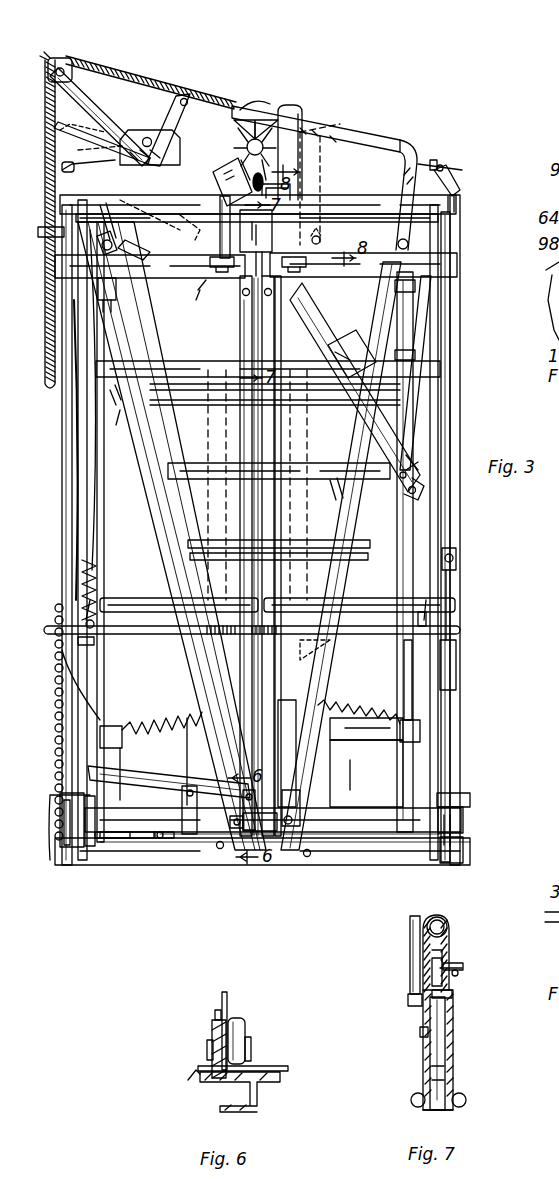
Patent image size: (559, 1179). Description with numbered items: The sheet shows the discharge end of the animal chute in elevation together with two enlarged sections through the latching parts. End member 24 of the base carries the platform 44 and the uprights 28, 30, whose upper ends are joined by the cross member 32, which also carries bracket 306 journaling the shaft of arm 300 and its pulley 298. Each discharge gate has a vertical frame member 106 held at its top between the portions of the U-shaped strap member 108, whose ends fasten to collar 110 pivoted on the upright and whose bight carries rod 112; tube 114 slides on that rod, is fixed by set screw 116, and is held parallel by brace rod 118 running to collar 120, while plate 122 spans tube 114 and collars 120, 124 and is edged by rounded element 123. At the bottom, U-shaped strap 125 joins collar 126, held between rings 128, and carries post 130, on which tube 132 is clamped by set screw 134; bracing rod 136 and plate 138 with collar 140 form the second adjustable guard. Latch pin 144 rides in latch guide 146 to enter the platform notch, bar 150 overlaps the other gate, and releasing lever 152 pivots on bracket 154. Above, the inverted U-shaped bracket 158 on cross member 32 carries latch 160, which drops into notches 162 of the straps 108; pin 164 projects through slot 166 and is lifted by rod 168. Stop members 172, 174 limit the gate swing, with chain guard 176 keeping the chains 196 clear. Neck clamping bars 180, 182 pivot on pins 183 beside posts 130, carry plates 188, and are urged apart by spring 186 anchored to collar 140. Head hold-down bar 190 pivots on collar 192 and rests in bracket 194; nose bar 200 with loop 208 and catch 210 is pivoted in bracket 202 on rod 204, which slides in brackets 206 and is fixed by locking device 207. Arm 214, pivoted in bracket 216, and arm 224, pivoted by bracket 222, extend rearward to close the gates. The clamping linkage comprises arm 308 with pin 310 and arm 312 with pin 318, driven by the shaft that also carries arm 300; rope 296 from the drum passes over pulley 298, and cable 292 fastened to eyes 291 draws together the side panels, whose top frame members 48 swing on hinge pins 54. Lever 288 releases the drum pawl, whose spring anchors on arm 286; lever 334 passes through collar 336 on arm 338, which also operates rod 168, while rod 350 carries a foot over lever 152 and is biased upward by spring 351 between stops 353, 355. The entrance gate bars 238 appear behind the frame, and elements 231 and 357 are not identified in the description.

In FIG. 3, the pulley 298 is at (56, 62).
In FIG. 3, the rope 296 is at (105, 66).
In FIG. 3, the arm 300 is at (92, 98).
In FIG. 3, the arm 308 is at (165, 105).
In FIG. 3, the lever 334 is at (188, 92).
In FIG. 3, the lever 288 is at (222, 108).
In FIG. 3, the collar 336 is at (251, 96).
In FIG. 3, the arm 286 is at (293, 112).
In FIG. 3, the arm 312 is at (311, 128).
In FIG. 3, the cable 292 is at (392, 150).
In FIG. 3, the pin 318 is at (404, 240).
In FIG. 3, the eyes 291 is at (448, 162).
In FIG. 3, the arm 338 is at (215, 152).
In FIG. 3, the bracket 306 is at (176, 176).
In FIG. 3, the inverted U-shaped bracket 158 is at (286, 212).
In FIG. 7, the inverted U-shaped bracket 158 is at (442, 950).
In FIG. 3, the cross member 32 is at (378, 210).
In FIG. 7, the cross member 32 is at (446, 924).
In FIG. 3, the arm 214 is at (220, 222).
In FIG. 7, the arm 214 is at (420, 918).
In FIG. 3, the pin 310 is at (122, 190).
In FIG. 3, the collar 124 is at (104, 280).
In FIG. 3, the bracket 216 is at (212, 266).
In FIG. 3, the bracket 222 is at (300, 264).
In FIG. 3, the collar 110 is at (450, 258).
In FIG. 3, the U-shaped strap member 108 is at (456, 262).
In FIG. 7, the U-shaped strap member 108 is at (452, 1010).
In FIG. 3, the rod 112 is at (200, 282).
In FIG. 7, the rod 112 is at (440, 1055).
In FIG. 3, the plate 122 is at (372, 312).
In FIG. 7, the plate 122 is at (445, 1070).
In FIG. 3, the latch 160 is at (262, 260).
In FIG. 7, the latch 160 is at (440, 960).
In FIG. 3, the head hold-down bar 190 is at (318, 318).
In FIG. 3, the bracket 194 is at (340, 350).
In FIG. 3, the bolt head set screw 116 is at (240, 285).
In FIG. 7, the bolt head set screw 116 is at (440, 1044).
In FIG. 3, the tube 114 is at (248, 325).
In FIG. 7, the tube 114 is at (440, 1084).
In FIG. 3, the arm 224 is at (432, 290).
In FIG. 3, the collar 120 is at (418, 352).
In FIG. 3, the brace rod 118 is at (440, 364).
In FIG. 7, the brace rod 118 is at (420, 1108).
In FIG. 3, the upright 30 is at (458, 380).
In FIG. 3, the vertical frame member 106 is at (418, 396).
In FIG. 3, the collar 192 is at (415, 458).
In FIG. 3, the upright 28 is at (70, 430).
In FIG. 3, the neck clamping bar 180 is at (222, 428).
In FIG. 3, the cylindrical bars 238 is at (250, 470).
In FIG. 3, the neck clamping bar 182 is at (360, 428).
In FIG. 3, the plate 188 is at (140, 500).
In FIG. 3, the rod 350 is at (92, 518).
In FIG. 3, the brackets 206 is at (460, 545).
In FIG. 3, the locking device 207 is at (460, 556).
In FIG. 3, the rod 204 is at (452, 578).
In FIG. 3, the bracing rod 136 is at (430, 600).
In FIG. 3, the loop 208 is at (420, 616).
In FIG. 3, the bar 200 is at (380, 622).
In FIG. 3, the bracket 202 is at (460, 635).
In FIG. 3, the stop 355 is at (96, 566).
In FIG. 3, the spring 351 is at (98, 590).
In FIG. 3, the stop 353 is at (205, 658).
In FIG. 3, the catch 210 is at (70, 650).
In FIG. 3, the chains 196 is at (70, 703).
In FIG. 3, the tube 132 is at (280, 692).
In FIG. 3, the bolt-head set screw 134 is at (290, 714).
In FIG. 3, the plate 138 is at (410, 702).
In FIG. 3, the spring 186 is at (395, 718).
In FIG. 3, the collar 140 is at (420, 730).
In FIG. 3, the lever 357 is at (98, 770).
In FIG. 3, the post 130 is at (300, 764).
In FIG. 6, the post 130 is at (238, 1028).
In FIG. 3, the pins 183 is at (292, 815).
In FIG. 3, the U-shaped strap 125 is at (422, 812).
In FIG. 6, the U-shaped strap 125 is at (250, 1044).
In FIG. 3, the bracket 154 is at (176, 862).
In FIG. 3, the plate 231 is at (134, 850).
In FIG. 3, the collar 126 is at (462, 810).
In FIG. 3, the rings 128 is at (462, 796).
In FIG. 3, the chain guard 176 is at (80, 845).
In FIG. 3, the stop members 172 is at (66, 840).
In FIG. 3, the stop members 174 is at (96, 840).
In FIG. 3, the releasing lever 152 is at (150, 840).
In FIG. 6, the releasing lever 152 is at (228, 1000).
In FIG. 3, the latch pin 144 is at (192, 820).
In FIG. 6, the latch pin 144 is at (212, 1036).
In FIG. 3, the hinge pins 54 is at (220, 850).
In FIG. 3, the end member 24 is at (228, 858).
In FIG. 6, the end member 24 is at (256, 1095).
In FIG. 3, the platform 44 is at (258, 836).
In FIG. 6, the platform 44 is at (265, 1068).
In FIG. 3, the latch guide 146 is at (258, 832).
In FIG. 6, the latch guide 146 is at (208, 1050).
In FIG. 3, the bar 150 is at (312, 852).
In FIG. 6, the top frame member 48 is at (190, 1076).
In FIG. 7, the slot 166 is at (448, 964).
In FIG. 7, the pin 164 is at (462, 970).
In FIG. 7, the rod 168 is at (458, 976).
In FIG. 7, the notches 162 is at (450, 1000).
In FIG. 7, the rounded element 123 is at (462, 1102).